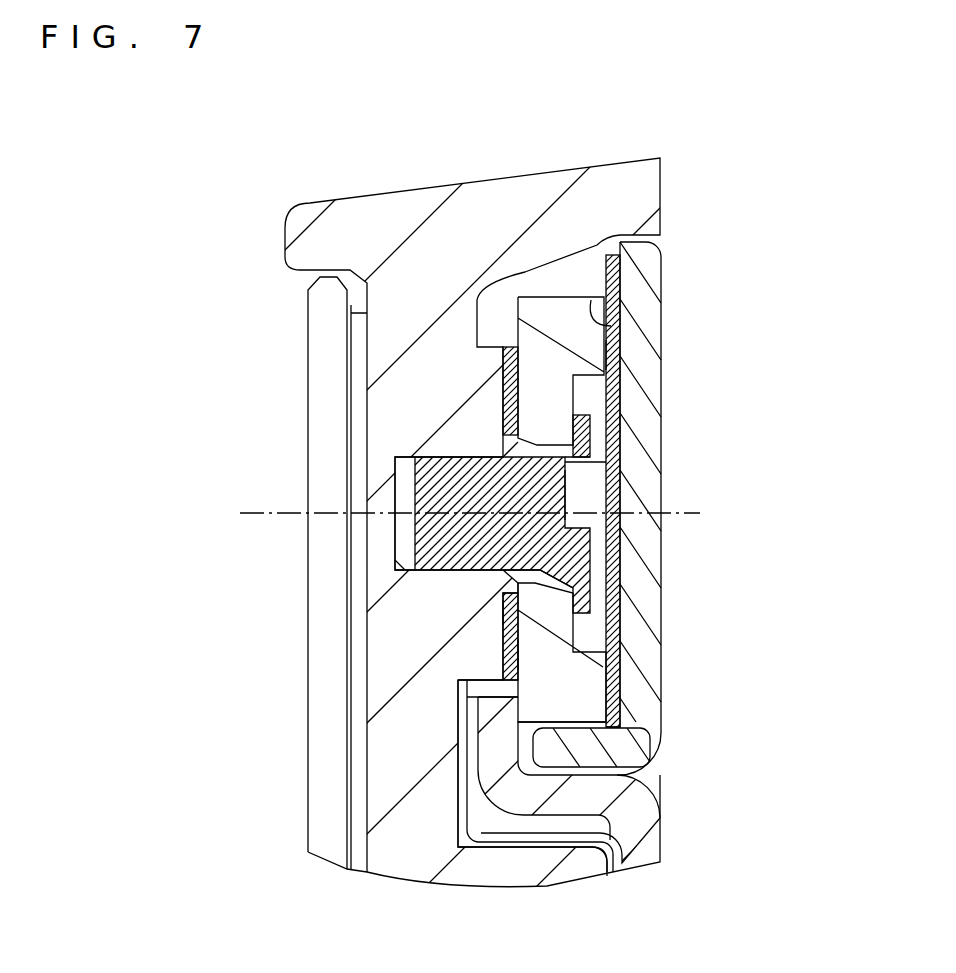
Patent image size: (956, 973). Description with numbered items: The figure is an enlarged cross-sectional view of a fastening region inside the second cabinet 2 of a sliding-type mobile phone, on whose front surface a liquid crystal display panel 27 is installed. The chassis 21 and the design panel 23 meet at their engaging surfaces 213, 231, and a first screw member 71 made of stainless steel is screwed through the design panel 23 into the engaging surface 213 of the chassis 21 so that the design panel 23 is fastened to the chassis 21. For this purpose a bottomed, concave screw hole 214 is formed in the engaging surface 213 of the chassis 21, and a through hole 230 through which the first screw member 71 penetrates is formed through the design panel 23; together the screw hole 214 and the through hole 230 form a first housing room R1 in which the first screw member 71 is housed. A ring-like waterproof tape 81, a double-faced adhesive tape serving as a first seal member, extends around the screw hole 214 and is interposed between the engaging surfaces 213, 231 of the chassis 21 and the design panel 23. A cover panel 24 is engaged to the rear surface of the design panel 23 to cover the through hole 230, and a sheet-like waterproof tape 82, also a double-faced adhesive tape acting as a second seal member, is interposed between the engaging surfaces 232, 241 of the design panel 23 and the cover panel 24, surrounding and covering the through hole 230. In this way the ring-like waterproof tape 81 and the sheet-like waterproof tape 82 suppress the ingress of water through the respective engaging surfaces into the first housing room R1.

The second cabinet 2 is at (712, 168).
The chassis 21 is at (497, 205).
The design panel 23 is at (555, 398).
The cover panel 24 is at (650, 530).
The liquid crystal display panel 27 is at (328, 780).
The first screw member 71 is at (560, 557).
The ring-like waterproof tape 81 is at (505, 390).
The sheet-like waterproof tape 82 is at (617, 620).
The engaging surface 213 is at (520, 655).
The screw hole 214 is at (400, 568).
The through hole 230 is at (538, 443).
The engaging surface 231 is at (508, 612).
The engaging surface 232 is at (610, 353).
The engaging surface 241 is at (607, 328).
The first housing room R1 is at (585, 500).